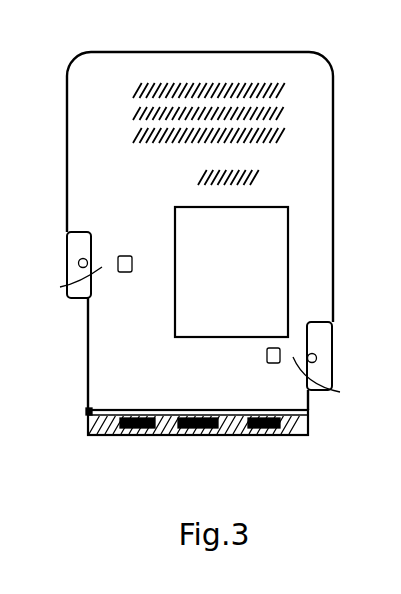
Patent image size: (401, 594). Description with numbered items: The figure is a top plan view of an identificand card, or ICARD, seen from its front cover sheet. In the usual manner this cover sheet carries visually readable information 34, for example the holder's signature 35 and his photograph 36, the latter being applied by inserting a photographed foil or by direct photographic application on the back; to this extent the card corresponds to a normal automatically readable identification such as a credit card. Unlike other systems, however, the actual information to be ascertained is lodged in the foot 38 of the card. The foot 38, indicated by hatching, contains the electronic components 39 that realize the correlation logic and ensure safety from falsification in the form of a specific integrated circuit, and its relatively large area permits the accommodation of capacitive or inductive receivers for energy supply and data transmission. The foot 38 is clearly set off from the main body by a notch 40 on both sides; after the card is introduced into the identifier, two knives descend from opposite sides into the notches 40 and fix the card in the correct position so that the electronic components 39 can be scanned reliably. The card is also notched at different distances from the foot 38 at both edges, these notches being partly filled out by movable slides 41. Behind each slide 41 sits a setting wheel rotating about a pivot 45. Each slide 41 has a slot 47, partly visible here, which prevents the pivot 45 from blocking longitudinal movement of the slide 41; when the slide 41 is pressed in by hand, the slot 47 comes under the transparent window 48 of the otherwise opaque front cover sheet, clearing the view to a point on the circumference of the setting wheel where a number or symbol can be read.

The visually readable information 34 is at (203, 86).
The signature 35 is at (263, 178).
The photograph 36 is at (273, 252).
The foot 38 is at (98, 436).
The electronic components 39 is at (155, 433).
The notch 40 is at (87, 412).
The slide 41 is at (73, 242).
The pivot 45 is at (60, 287).
The slot 47 is at (78, 263).
The window 48 is at (120, 274).